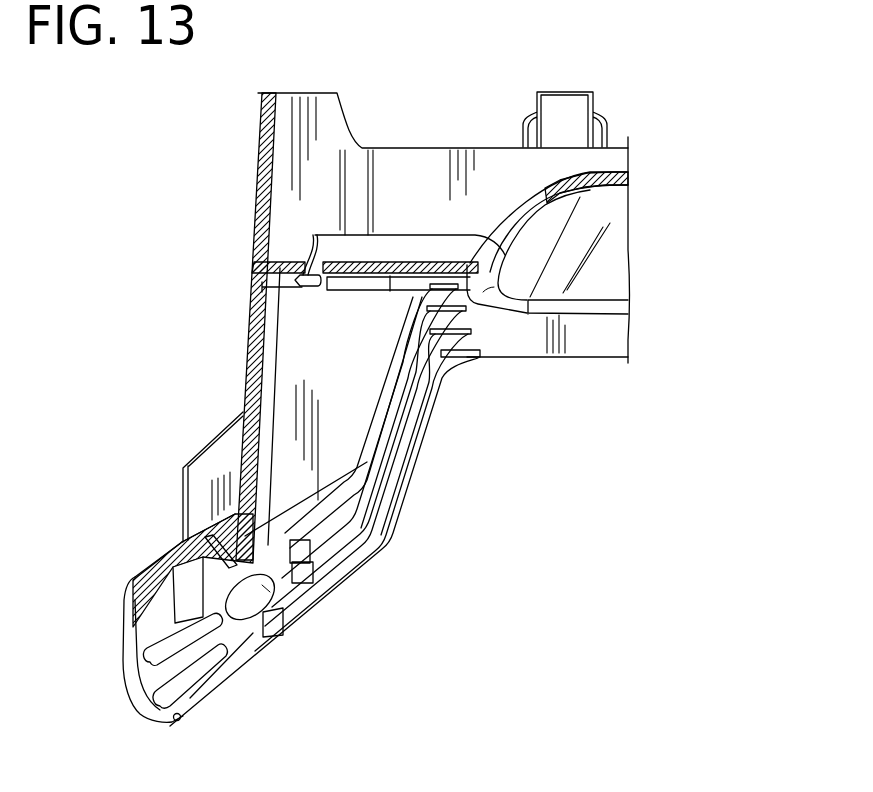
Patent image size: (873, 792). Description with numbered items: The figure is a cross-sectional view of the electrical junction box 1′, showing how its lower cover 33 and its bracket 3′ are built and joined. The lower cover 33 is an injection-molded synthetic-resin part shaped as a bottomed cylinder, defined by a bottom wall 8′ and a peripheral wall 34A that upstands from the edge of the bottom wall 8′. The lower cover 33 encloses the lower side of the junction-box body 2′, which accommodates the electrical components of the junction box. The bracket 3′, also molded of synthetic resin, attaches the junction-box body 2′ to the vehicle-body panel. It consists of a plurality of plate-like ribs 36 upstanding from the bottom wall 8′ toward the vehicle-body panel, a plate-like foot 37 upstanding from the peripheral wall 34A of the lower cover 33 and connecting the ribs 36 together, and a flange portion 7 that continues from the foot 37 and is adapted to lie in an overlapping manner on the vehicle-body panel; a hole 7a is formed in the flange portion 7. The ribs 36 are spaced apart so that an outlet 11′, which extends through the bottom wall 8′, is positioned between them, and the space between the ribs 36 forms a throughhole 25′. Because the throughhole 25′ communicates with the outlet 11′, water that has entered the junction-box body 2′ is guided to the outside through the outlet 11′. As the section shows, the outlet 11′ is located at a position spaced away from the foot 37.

The electrical junction box 1′ is at (692, 136).
The junction-box body 2′ is at (692, 193).
The bracket 3′ is at (402, 556).
The flange portion 7 is at (241, 673).
The hole 7a is at (250, 612).
The bottom wall 8′ is at (610, 328).
The outlet 11′ is at (250, 332).
The throughhole 25′ is at (467, 293).
The lower cover 33 is at (633, 238).
The peripheral wall 34A is at (263, 192).
The ribs 36 is at (347, 407).
The foot 37 is at (253, 288).